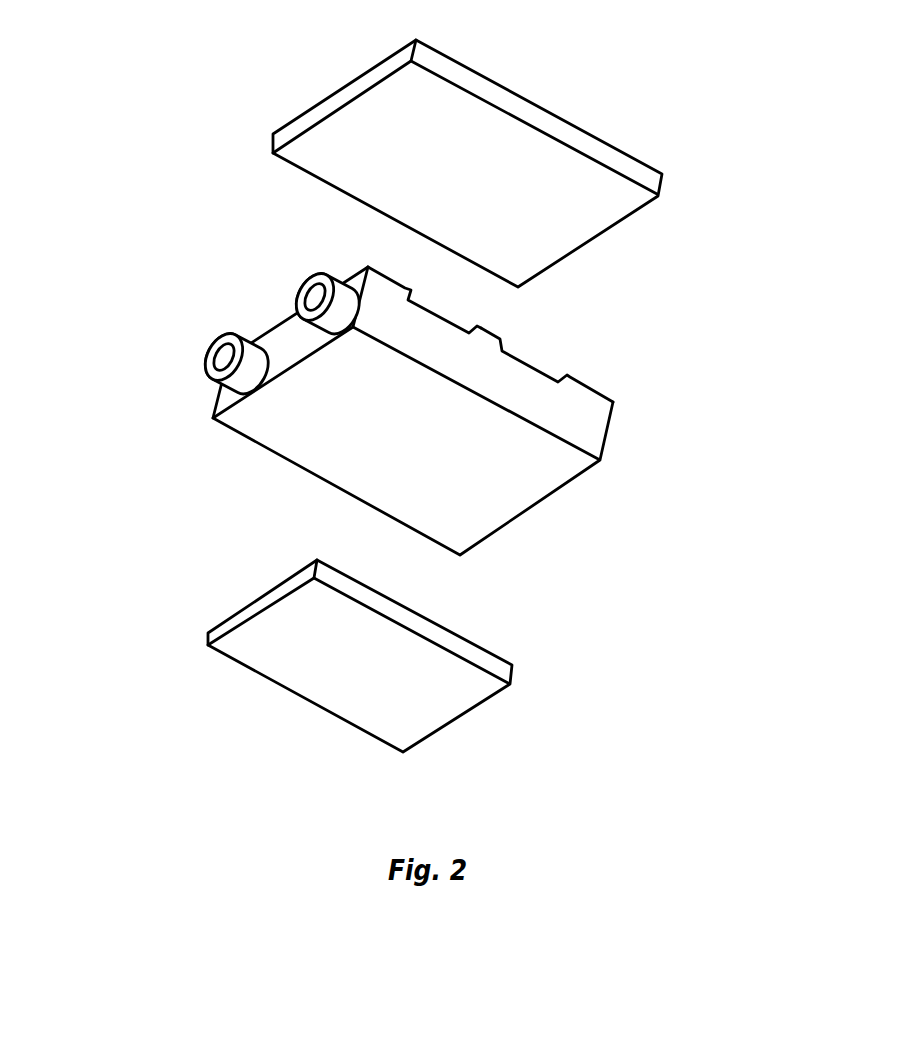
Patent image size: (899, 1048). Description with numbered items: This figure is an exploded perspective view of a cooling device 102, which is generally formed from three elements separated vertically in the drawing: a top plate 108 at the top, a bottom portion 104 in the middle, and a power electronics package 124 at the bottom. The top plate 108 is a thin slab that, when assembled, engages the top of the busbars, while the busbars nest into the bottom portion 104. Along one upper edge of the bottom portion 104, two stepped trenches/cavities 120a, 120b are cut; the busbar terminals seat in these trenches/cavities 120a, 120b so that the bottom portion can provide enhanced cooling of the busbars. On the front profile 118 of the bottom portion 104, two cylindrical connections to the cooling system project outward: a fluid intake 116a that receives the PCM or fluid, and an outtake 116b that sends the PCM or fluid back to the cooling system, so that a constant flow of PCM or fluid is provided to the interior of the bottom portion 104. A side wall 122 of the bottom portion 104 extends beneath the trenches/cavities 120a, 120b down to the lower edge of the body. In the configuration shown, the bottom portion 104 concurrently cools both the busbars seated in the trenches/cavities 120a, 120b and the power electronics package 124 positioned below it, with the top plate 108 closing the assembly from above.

The cooling device 102 is at (380, 401).
The bottom portion 104 is at (405, 422).
The top plate 108 is at (336, 82).
The fluid intake 116a is at (308, 279).
The outtake 116b is at (212, 344).
The front profile 118 is at (282, 343).
The trench/cavity 120a is at (448, 315).
The trench/cavity 120b is at (541, 365).
The side wall 122 is at (522, 388).
The power electronics package 124 is at (473, 715).